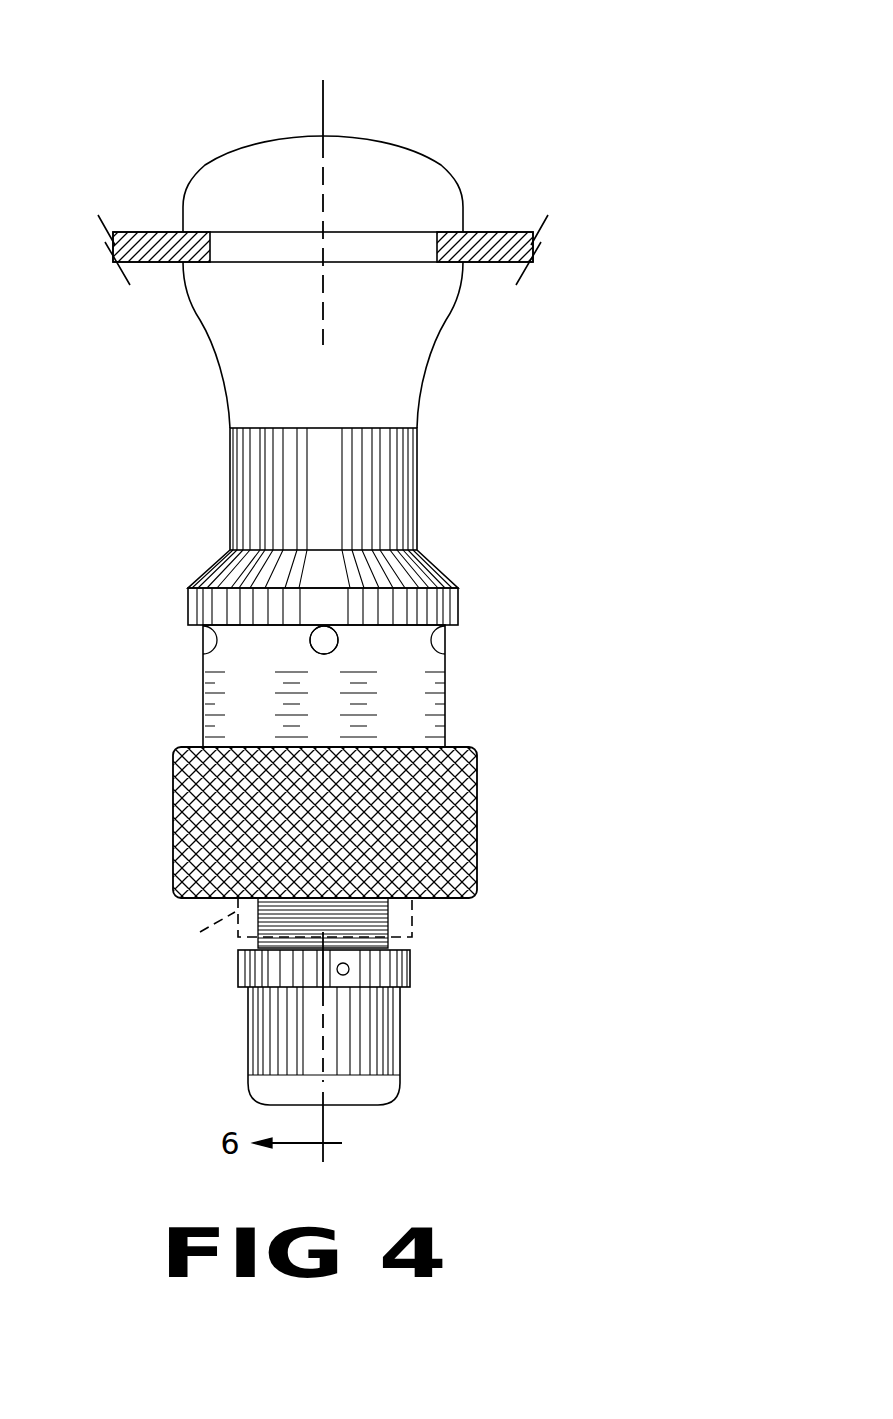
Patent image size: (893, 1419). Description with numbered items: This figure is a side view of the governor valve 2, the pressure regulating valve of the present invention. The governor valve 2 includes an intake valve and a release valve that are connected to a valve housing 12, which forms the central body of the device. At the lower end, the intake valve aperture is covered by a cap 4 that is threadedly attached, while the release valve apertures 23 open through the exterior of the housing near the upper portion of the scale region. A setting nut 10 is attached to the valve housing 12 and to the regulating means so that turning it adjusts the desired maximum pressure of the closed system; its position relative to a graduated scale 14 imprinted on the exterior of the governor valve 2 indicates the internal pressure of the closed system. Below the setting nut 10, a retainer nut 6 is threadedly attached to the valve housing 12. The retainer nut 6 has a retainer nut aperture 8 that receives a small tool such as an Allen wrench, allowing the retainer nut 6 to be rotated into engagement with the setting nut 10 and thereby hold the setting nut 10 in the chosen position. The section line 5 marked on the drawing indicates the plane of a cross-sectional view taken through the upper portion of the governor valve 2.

The governor valve 2 is at (560, 123).
The cap 4 is at (248, 1057).
The section line 5- 5 is at (340, 97).
The retainer nut 6 is at (410, 970).
The retainer nut aperture 8 is at (343, 975).
The setting nut 10 is at (173, 840).
The valve housing 12 is at (420, 513).
The graduated scale 14 is at (187, 747).
The release valve apertures 23 is at (440, 640).